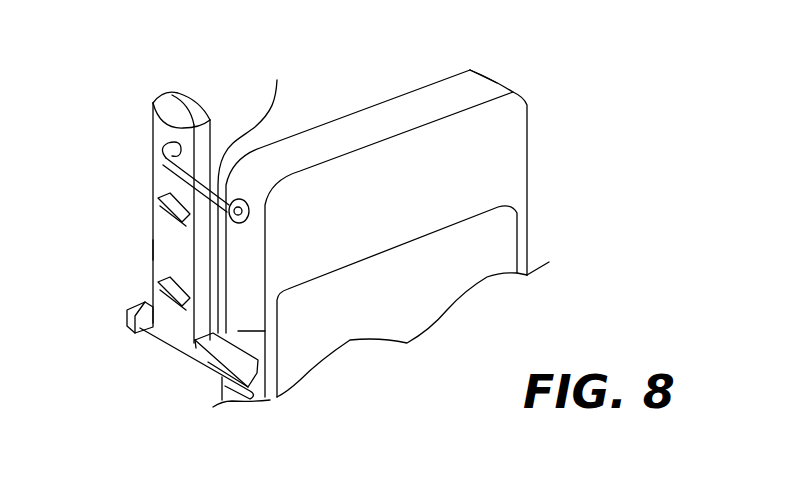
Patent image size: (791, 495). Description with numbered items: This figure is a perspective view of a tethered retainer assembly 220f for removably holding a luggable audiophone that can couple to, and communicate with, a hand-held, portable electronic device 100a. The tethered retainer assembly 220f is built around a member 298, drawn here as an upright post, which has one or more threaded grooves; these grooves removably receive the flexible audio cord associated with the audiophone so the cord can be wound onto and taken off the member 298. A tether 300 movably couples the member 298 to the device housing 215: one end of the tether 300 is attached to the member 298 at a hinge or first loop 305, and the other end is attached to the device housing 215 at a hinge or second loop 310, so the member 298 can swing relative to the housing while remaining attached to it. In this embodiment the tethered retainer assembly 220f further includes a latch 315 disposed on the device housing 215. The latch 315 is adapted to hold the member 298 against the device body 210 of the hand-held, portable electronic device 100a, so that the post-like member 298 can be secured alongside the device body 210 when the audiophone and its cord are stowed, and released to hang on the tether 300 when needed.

The tethered retainer assembly 220f is at (208, 90).
The hand-held, portable electronic device 100a is at (567, 157).
The device housing 215 is at (494, 80).
The device body 210 is at (497, 241).
The tether 300 is at (260, 230).
The second loop 310 is at (241, 200).
The first loop 305 is at (166, 146).
The member 298 is at (153, 250).
The latch 315 is at (238, 331).